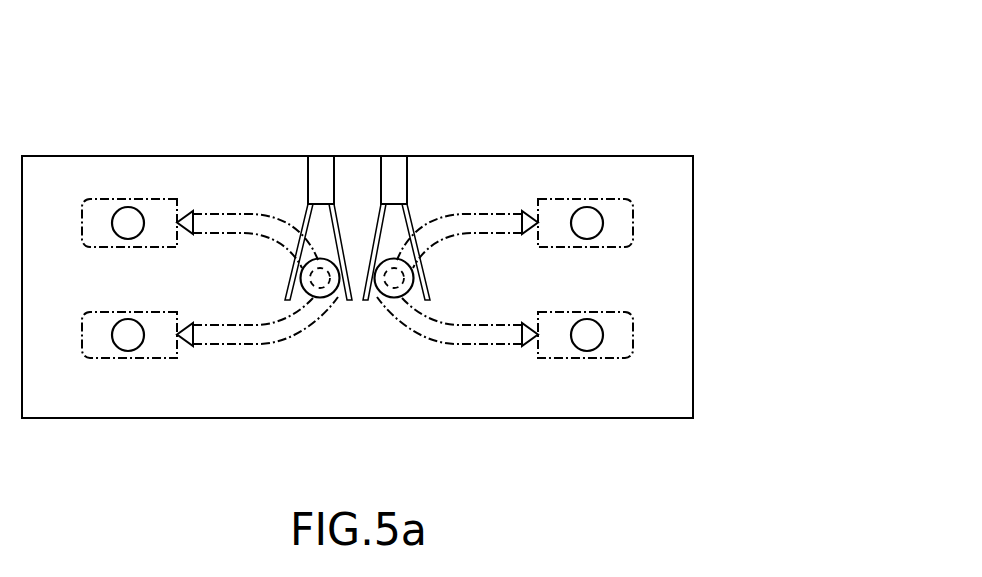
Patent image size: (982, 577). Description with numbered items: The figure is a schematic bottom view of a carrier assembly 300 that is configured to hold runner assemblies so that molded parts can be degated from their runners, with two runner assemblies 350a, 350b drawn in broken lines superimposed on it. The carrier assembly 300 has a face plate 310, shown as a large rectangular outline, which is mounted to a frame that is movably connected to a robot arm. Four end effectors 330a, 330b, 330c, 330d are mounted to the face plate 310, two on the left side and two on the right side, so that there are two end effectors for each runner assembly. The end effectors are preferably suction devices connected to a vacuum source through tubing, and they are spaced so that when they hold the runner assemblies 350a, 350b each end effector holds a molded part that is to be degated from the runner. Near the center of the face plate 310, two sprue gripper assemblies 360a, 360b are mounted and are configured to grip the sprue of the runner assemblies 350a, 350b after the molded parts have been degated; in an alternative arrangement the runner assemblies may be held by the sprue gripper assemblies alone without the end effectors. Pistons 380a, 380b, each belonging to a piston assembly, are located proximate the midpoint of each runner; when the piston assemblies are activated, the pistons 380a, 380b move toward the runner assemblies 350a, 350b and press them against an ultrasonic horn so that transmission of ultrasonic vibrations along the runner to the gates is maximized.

The carrier assembly 300 is at (608, 122).
The face plate 310 is at (693, 342).
The end effector 330a is at (129, 222).
The end effector 330b is at (128, 336).
The end effector 330c is at (588, 224).
The end effector 330d is at (588, 334).
The runner assembly 350a is at (257, 338).
The runner assembly 350b is at (455, 338).
The sprue gripper assembly 360a is at (323, 172).
The sprue gripper assembly 360b is at (395, 172).
The piston 380a is at (330, 297).
The piston 380b is at (387, 297).